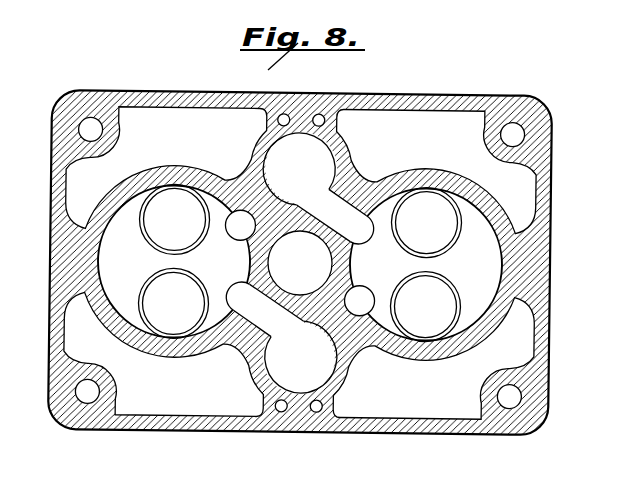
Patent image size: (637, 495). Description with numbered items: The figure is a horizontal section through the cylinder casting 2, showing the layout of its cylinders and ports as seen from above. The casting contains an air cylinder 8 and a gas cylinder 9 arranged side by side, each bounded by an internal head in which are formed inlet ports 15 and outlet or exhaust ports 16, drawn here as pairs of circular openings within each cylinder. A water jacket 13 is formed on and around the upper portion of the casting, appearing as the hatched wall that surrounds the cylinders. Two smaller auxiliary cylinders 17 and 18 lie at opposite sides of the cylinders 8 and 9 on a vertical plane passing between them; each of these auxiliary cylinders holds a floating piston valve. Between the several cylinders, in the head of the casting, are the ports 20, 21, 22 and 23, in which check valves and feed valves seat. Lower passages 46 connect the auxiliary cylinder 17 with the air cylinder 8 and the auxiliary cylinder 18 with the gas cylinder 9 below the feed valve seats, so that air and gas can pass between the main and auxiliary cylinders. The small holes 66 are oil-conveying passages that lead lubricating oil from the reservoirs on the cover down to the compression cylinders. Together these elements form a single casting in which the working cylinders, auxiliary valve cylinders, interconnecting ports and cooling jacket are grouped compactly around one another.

The cylinder casting 2 is at (50, 165).
The air cylinder 8 is at (168, 255).
The gas cylinder 9 is at (433, 265).
The water jacket 13 is at (175, 402).
The inlet ports 15 is at (299, 305).
The outlet or exhaust ports 16 is at (300, 221).
The auxiliary cylinder 17 is at (298, 358).
The auxiliary cylinder 18 is at (301, 168).
The port 20 is at (368, 294).
The port 21 is at (241, 289).
The port 22 is at (238, 233).
The port 23 is at (365, 238).
The passages 46 is at (302, 263).
The oil-conveying passages 66 is at (316, 113).